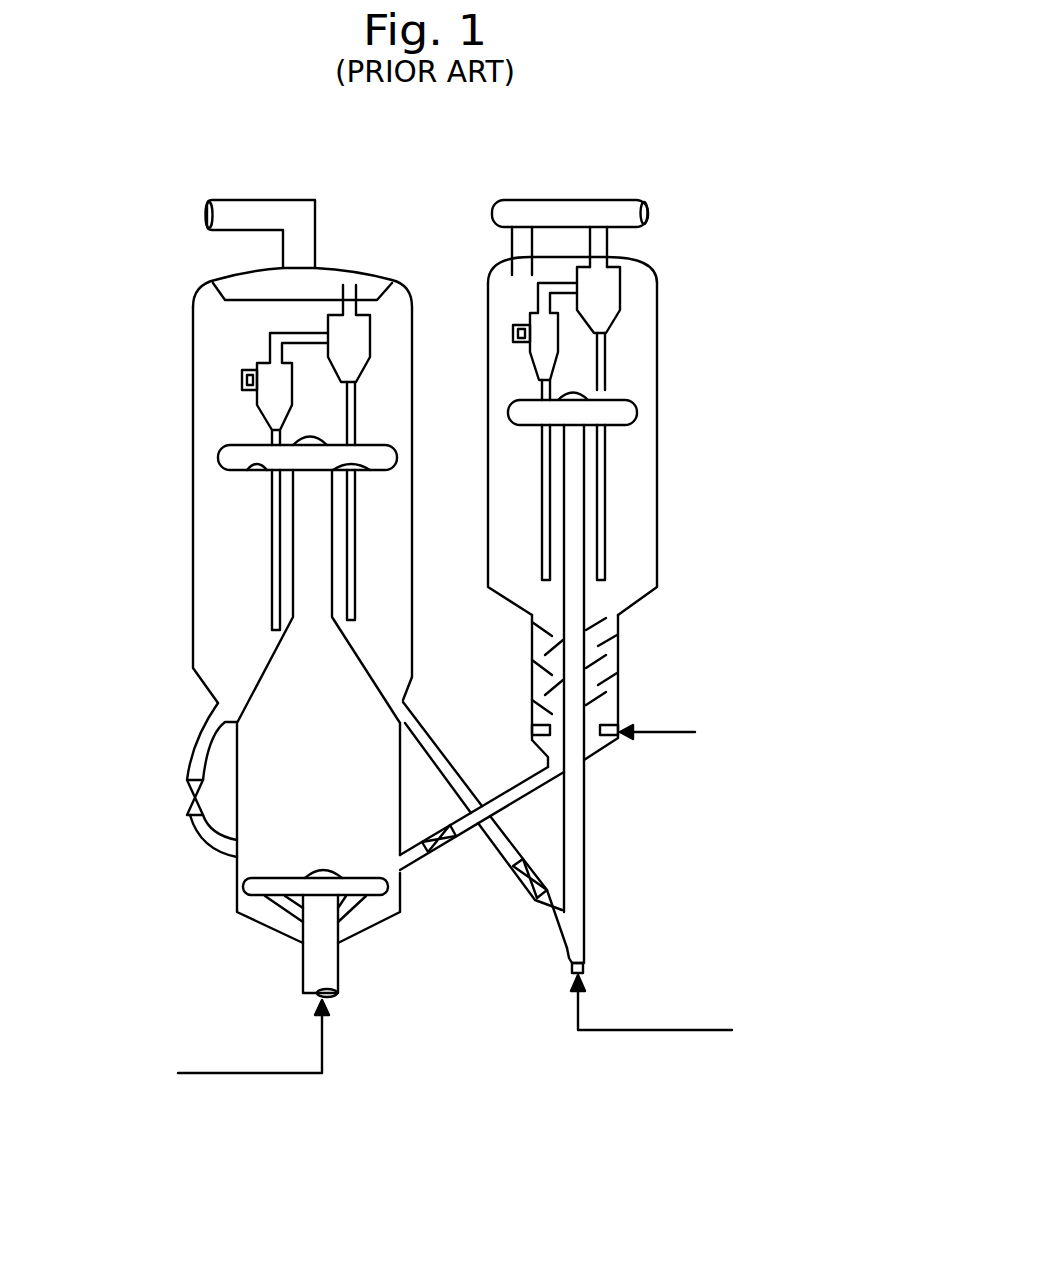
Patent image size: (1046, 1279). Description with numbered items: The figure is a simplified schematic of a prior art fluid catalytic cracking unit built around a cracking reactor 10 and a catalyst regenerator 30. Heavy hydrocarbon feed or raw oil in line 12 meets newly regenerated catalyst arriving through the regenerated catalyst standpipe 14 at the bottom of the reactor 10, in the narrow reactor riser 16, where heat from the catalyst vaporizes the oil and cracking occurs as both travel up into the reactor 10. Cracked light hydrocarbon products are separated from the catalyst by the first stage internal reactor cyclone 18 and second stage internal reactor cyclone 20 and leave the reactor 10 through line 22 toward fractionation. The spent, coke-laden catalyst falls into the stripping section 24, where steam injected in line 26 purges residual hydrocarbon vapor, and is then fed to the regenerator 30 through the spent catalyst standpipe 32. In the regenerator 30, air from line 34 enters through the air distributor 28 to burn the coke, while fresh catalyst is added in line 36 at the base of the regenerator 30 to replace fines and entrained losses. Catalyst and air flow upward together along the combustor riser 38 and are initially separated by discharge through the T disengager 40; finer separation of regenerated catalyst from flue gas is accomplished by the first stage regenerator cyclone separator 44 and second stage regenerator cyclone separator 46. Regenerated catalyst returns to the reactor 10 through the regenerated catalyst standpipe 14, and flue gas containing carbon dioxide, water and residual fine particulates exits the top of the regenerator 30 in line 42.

The reactor 10 is at (688, 498).
The line 12 is at (700, 1030).
The regenerated catalyst standpipe 14 is at (545, 912).
The reactor riser 16 is at (586, 808).
The first stage internal reactor cyclone 18 is at (558, 350).
The second stage internal reactor cyclone 20 is at (620, 297).
The line 22 is at (748, 212).
The stripping section 24 is at (632, 673).
The line 26 is at (695, 732).
The air distributor 28 is at (342, 978).
The catalyst regenerator 30 is at (173, 474).
The spent catalyst standpipe 32 is at (452, 840).
The line 34 is at (218, 1073).
The line 36 is at (237, 870).
The combustor riser 38 is at (303, 517).
The "T" disengager 40 is at (312, 447).
The line 42 is at (190, 215).
The first stage regenerator cyclone separator 44 is at (257, 397).
The second stage regenerator cyclone separator 46 is at (371, 336).